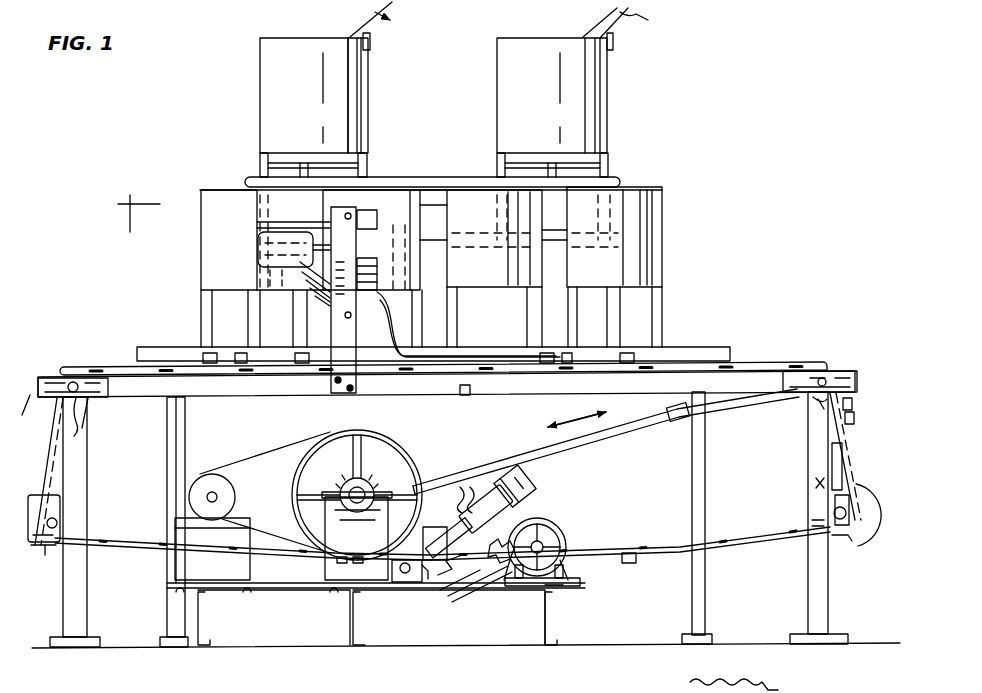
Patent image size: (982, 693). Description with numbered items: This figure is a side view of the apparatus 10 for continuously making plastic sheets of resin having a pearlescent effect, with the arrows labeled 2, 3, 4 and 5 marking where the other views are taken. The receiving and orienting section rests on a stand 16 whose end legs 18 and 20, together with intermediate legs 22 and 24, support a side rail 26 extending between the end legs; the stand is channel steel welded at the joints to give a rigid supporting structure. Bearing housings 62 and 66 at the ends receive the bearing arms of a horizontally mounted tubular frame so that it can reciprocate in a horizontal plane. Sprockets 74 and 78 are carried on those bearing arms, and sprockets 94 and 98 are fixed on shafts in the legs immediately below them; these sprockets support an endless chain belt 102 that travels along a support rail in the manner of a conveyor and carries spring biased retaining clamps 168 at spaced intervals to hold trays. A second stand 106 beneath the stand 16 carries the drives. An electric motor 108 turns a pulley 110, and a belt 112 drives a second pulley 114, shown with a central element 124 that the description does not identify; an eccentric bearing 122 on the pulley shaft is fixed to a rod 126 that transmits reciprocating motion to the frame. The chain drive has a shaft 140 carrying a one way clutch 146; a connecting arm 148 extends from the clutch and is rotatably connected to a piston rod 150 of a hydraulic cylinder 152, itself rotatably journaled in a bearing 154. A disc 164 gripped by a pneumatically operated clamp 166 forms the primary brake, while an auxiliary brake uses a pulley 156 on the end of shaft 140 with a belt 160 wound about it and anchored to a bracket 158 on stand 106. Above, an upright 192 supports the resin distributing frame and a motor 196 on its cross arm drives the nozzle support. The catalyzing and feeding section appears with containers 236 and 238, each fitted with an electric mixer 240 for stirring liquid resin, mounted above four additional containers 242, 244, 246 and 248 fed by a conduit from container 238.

The apparatus 10 is at (110, 136).
The section line 2 is at (870, 88).
The section line 3 is at (868, 230).
The section line 4 is at (53, 430).
The section line 5 is at (680, 352).
The stand 16 is at (186, 400).
The end leg 18 is at (94, 564).
The end leg 20 is at (808, 592).
The intermediate leg 22 is at (172, 438).
The intermediate leg 24 is at (690, 462).
The side rail 26 is at (428, 394).
The bearing housing 62 is at (94, 400).
The bearing housing 66 is at (842, 366).
The sprocket 74 is at (84, 432).
The sprocket 78 is at (807, 413).
The sprocket 94 is at (42, 493).
The sprocket 98 is at (848, 550).
The endless chain belt 102 is at (764, 540).
The second stand 106 is at (264, 592).
The electric motor 108 is at (208, 480).
The pulley 110 is at (222, 497).
The belt 112 is at (236, 470).
The second pulley 114 is at (408, 445).
The eccentric bearing 122 is at (364, 464).
The hub 124 is at (346, 480).
The rod 126 is at (582, 454).
The shaft 140 is at (560, 590).
The one way clutch 146 is at (564, 528).
The connecting arm 148 is at (548, 482).
The piston rod 150 is at (486, 484).
The hydraulic cylinder 152 is at (392, 530).
The bearing 154 is at (400, 582).
The pulley 156 is at (566, 538).
The bracket 158 is at (448, 588).
The belt 160 is at (484, 592).
The disc 164 is at (812, 482).
The pneumatically operated clamp 166 is at (832, 456).
The spring biased retaining clamp 168 is at (210, 358).
The upright 192 is at (357, 207).
The motor 196 is at (264, 258).
The container 236 is at (264, 70).
The container 238 is at (534, 40).
The electric mixer 240 is at (356, 34).
The container 242 is at (213, 223).
The container 244 is at (407, 190).
The container 246 is at (466, 196).
The container 248 is at (640, 210).